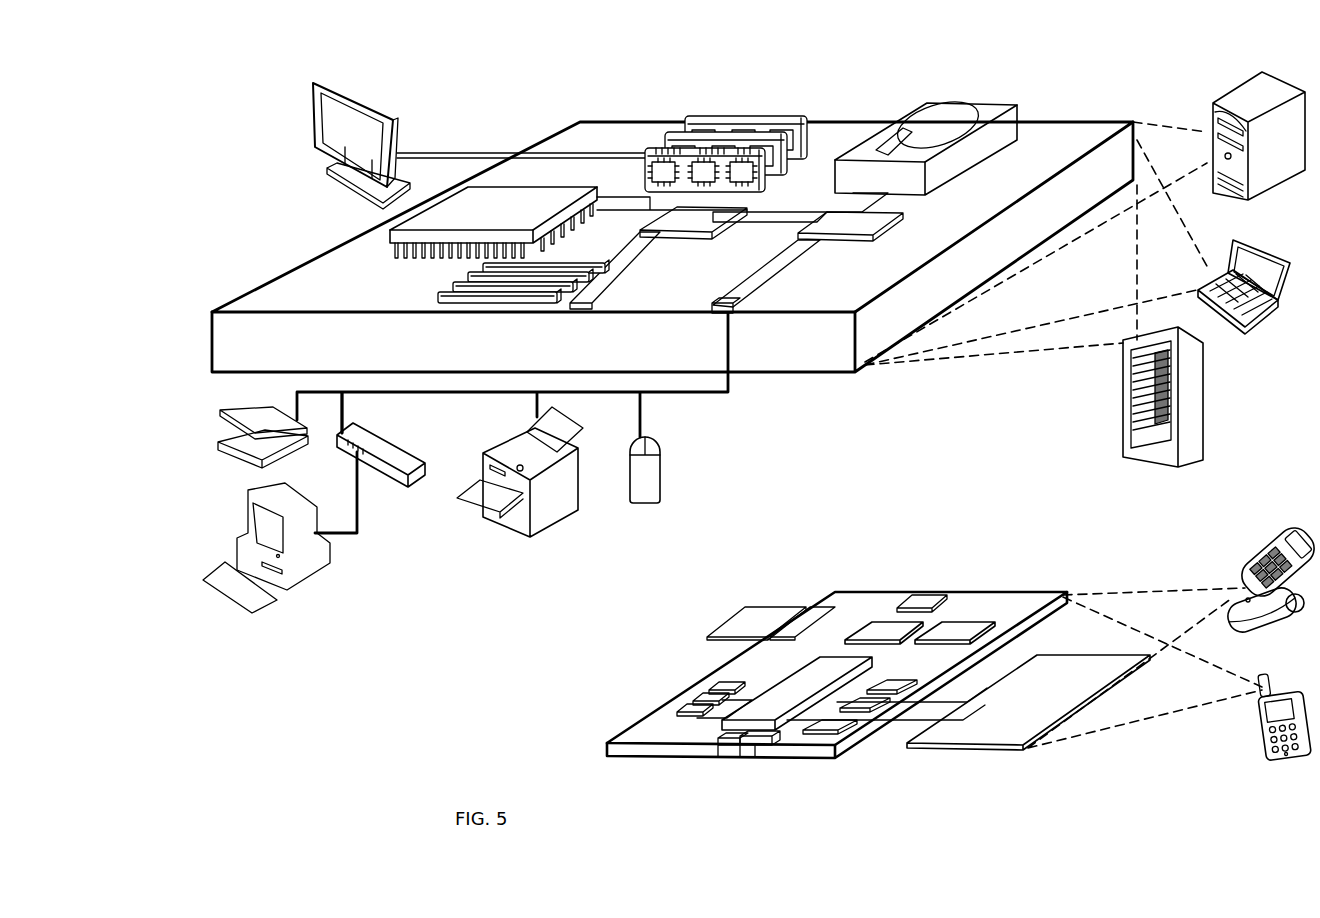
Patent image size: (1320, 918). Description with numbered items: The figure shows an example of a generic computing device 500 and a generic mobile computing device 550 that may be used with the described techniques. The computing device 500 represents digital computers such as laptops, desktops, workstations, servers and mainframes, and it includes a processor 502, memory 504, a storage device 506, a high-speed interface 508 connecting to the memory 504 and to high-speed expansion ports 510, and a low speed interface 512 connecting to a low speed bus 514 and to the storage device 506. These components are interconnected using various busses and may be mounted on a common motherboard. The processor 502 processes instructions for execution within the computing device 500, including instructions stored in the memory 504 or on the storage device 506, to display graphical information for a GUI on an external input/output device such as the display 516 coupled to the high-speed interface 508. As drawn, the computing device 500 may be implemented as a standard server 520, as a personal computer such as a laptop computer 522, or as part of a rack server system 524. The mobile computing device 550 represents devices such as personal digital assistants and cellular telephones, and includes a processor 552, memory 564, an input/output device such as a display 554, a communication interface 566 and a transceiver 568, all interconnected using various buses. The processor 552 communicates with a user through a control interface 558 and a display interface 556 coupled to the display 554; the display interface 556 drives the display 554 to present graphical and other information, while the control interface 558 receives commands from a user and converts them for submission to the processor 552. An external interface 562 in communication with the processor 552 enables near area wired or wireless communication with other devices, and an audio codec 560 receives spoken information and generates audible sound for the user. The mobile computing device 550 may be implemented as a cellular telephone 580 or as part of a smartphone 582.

The computing device 500 is at (511, 98).
The processor 502 is at (388, 240).
The memory 504 is at (702, 116).
The storage device 506 is at (914, 104).
The high-speed interface 508 is at (668, 218).
The high-speed expansion ports 510 is at (460, 280).
The low speed interface 512 is at (850, 223).
The low speed bus 514 is at (735, 313).
The display 516 is at (314, 84).
The standard server 520 is at (1212, 105).
The laptop computer 522 is at (1234, 241).
The rack server system 524 is at (1124, 420).
The mobile computing device 550 is at (818, 569).
The processor 552 is at (763, 755).
The display 554 is at (1024, 749).
The display interface 556 is at (847, 752).
The control interface 558 is at (883, 702).
The audio codec 560 is at (920, 593).
The external interface 562 is at (815, 604).
The memory 564 is at (747, 611).
The communication interface 566 is at (883, 627).
The transceiver 568 is at (957, 630).
The cellular telephone 580 is at (1283, 538).
The smartphone 582 is at (1268, 674).